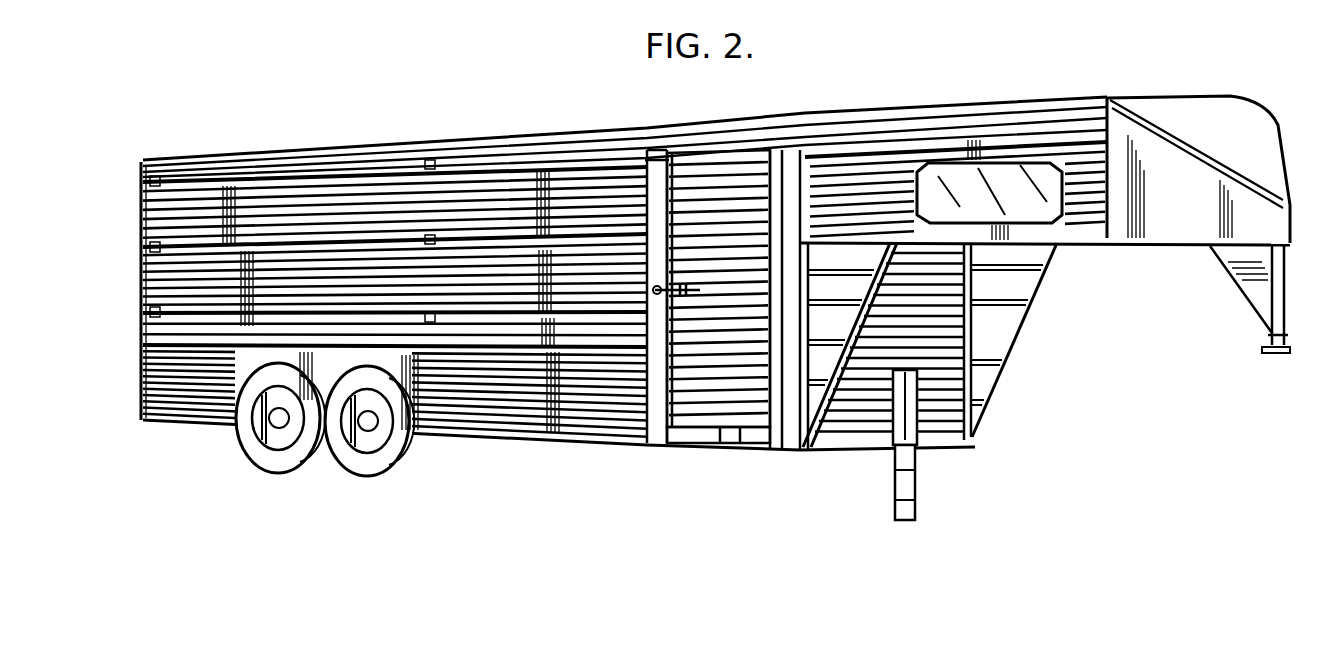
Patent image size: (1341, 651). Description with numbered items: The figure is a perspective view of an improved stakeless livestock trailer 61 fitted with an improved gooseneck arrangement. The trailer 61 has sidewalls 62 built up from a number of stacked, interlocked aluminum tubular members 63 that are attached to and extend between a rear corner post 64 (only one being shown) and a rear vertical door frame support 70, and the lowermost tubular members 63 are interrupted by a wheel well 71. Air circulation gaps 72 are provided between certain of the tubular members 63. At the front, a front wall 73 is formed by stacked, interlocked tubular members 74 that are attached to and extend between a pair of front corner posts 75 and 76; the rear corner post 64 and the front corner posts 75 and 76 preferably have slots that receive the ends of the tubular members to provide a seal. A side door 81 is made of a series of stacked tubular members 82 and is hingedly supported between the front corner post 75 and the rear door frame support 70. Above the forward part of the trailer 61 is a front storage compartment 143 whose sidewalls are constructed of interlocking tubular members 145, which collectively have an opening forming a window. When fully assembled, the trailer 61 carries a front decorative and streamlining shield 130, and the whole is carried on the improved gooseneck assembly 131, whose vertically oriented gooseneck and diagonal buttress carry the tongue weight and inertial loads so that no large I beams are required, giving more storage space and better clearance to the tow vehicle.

The stakeless livestock trailer 61 is at (517, 118).
The sidewalls 62 is at (185, 425).
The tubular members 63 is at (150, 276).
The rear corner post 64 is at (142, 195).
The rear vertical door frame support 70 is at (660, 152).
The wheel well 71 is at (418, 440).
The air circulation gaps 72 is at (240, 165).
The front wall 73 is at (856, 453).
The tubular members 74 is at (947, 435).
The front corner post 75 is at (787, 452).
The front corner post 76 is at (965, 445).
The side door 81 is at (678, 456).
The tubular members 82 is at (715, 430).
The front decorative and streamlining shield 130 is at (1200, 110).
The gooseneck assembly 131 is at (1305, 135).
The front storage compartment 143 is at (1018, 97).
The interlocking tubular members 145 is at (1086, 220).